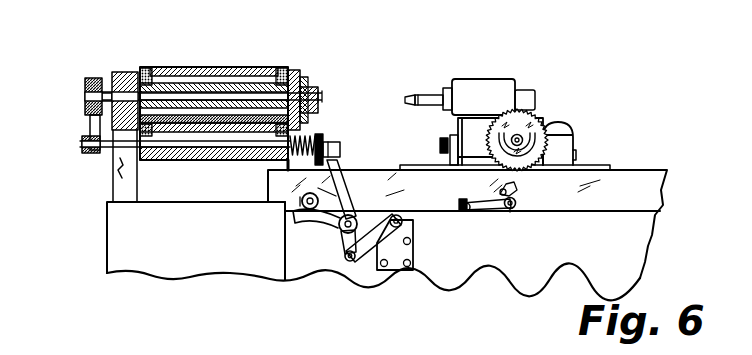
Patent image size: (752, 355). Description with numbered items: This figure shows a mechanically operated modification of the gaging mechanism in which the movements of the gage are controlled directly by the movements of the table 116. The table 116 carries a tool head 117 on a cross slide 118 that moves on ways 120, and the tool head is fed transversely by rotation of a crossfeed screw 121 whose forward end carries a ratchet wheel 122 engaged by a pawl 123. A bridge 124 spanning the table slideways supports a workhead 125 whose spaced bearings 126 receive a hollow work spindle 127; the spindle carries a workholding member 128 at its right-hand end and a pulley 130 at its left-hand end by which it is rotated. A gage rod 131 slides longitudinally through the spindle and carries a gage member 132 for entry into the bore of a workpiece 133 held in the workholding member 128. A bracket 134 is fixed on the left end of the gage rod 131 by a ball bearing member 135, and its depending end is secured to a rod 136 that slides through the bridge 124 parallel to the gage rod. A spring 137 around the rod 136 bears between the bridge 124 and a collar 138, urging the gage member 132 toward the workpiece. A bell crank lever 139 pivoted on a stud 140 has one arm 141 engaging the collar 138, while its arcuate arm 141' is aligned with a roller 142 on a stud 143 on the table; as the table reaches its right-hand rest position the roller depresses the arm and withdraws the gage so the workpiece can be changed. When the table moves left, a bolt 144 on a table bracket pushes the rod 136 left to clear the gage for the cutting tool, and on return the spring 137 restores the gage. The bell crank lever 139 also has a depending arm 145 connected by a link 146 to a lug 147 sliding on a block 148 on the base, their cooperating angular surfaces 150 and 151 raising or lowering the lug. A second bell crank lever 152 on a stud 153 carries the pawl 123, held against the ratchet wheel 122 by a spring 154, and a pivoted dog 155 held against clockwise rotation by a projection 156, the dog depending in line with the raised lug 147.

The table 116 is at (633, 178).
The tool head 117 is at (485, 90).
The cross slide 118 is at (560, 133).
The ways 120 is at (575, 138).
The crossfeed screw 121 is at (519, 140).
The ratchet wheel 122 is at (470, 101).
The pawl 123 is at (516, 186).
The bridge 124 is at (181, 190).
The workhead 125 is at (205, 70).
The bearings 126 is at (152, 72).
The hollow work spindle 127 is at (245, 86).
The workholding member 128 is at (305, 75).
The pulley 130 is at (126, 72).
The gage rod 131 is at (107, 96).
The gage member 132 is at (322, 103).
The workpiece 133 is at (318, 90).
The bracket 134 is at (90, 125).
The ball bearing member 135 is at (86, 88).
The rod 136 is at (105, 152).
The spring 137 is at (302, 138).
The collar 138 is at (340, 145).
The bell crank lever 139 is at (340, 196).
The stud 140 is at (341, 229).
The arm 141 is at (361, 202).
The arcuate arm 141' is at (316, 228).
The roller 142 is at (298, 204).
The stud 143 is at (319, 194).
The bolt 144 is at (446, 153).
The arm 145 is at (347, 257).
The link 146 is at (364, 246).
The lug 147 is at (398, 222).
The block 148 is at (413, 235).
The angular surface 150 is at (414, 246).
The angular surface 151 is at (412, 264).
The bell crank lever 152 is at (486, 206).
The stud 153 is at (510, 210).
The spring 154 is at (517, 203).
The dog 155 is at (467, 212).
The projection 156 is at (462, 204).